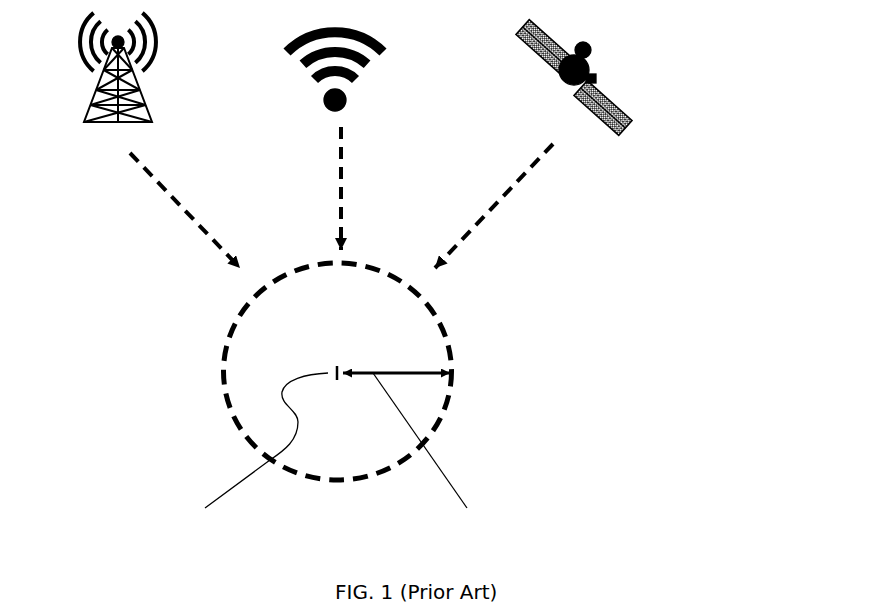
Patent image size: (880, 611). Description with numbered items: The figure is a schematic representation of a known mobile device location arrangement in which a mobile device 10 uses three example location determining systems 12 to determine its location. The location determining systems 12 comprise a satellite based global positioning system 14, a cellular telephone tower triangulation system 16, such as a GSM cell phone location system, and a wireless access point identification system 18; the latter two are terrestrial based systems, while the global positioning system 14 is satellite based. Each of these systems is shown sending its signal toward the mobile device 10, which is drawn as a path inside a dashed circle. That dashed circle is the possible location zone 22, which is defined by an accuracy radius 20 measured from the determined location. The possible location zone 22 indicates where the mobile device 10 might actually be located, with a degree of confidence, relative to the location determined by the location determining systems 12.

The mobile device 10 is at (245, 467).
The location determining systems 12 is at (611, 160).
The satellite based global positioning system 14 is at (642, 69).
The cellular telephone tower triangulation system 16 is at (166, 70).
The wireless access point identification system 18 is at (380, 86).
The accuracy radius 20 is at (430, 467).
The possible location zone 22 is at (443, 413).